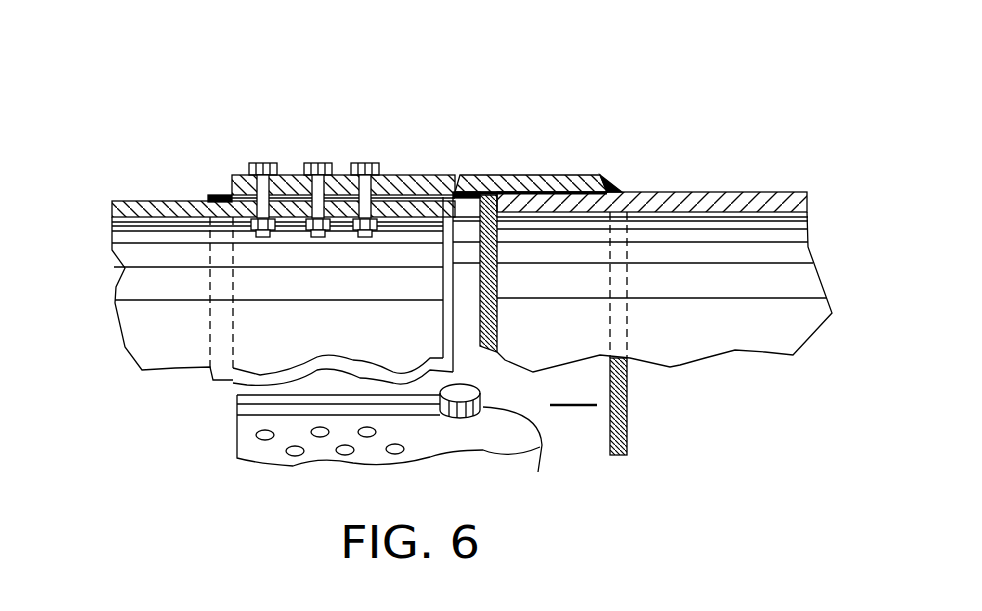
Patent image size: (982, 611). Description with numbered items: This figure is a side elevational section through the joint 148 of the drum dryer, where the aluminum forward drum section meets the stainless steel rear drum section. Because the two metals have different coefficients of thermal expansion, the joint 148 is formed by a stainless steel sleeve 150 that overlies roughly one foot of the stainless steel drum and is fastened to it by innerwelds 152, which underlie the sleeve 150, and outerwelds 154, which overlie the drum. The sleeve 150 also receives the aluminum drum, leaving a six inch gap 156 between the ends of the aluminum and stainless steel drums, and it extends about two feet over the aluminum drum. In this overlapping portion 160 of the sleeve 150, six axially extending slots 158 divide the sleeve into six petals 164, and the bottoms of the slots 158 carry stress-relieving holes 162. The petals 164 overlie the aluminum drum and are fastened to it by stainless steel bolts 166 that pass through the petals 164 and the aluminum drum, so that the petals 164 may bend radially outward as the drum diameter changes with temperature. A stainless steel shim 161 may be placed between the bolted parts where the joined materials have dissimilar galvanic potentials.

The joint 148 is at (486, 160).
The stainless steel sleeve 150 is at (547, 175).
The innerwelds 152 is at (510, 173).
The outerwelds 154 is at (615, 190).
The gap 156 is at (460, 175).
The axially extending slots 158 is at (218, 378).
The overlapping portion 160 is at (397, 175).
The stainless steel shim 161 is at (217, 197).
The stress-relieving holes 162 is at (555, 430).
The petals 164 is at (237, 436).
The stainless steel bolts 166 is at (368, 163).